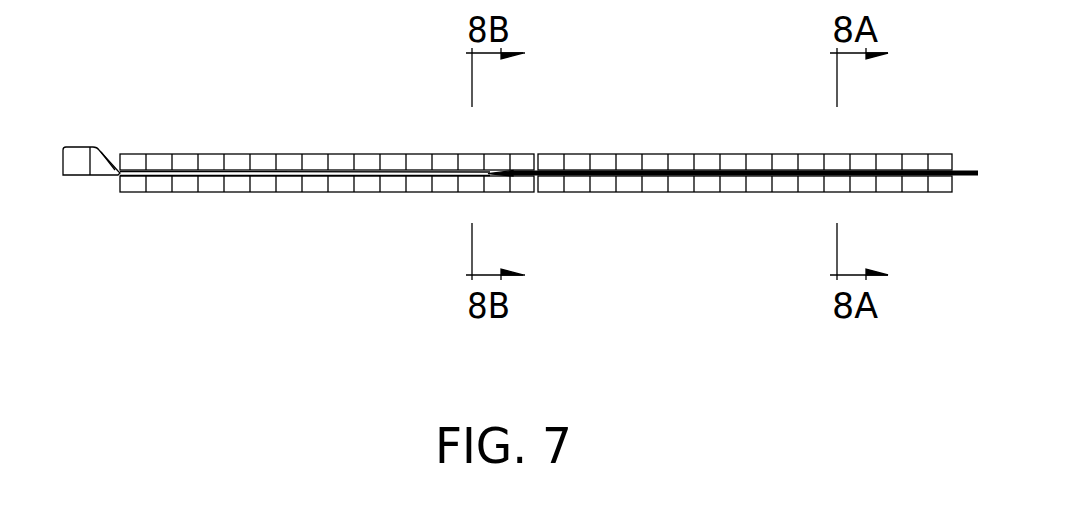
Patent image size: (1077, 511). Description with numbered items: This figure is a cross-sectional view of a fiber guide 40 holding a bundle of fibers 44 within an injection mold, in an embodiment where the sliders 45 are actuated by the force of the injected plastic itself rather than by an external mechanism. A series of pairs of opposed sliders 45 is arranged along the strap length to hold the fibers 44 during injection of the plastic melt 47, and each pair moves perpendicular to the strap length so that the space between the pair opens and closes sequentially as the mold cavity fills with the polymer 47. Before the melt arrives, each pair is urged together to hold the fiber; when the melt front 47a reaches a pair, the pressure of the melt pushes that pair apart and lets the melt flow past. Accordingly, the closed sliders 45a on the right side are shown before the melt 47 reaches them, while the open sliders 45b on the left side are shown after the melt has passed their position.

The tile strip assembly 40 is at (520, 157).
The fibers 44 is at (970, 176).
The sliders 45 is at (536, 172).
The closed sliders 45a is at (732, 193).
The open sliders 45b is at (237, 193).
The plastic melt 47 is at (375, 186).
The melt front 47a is at (553, 169).